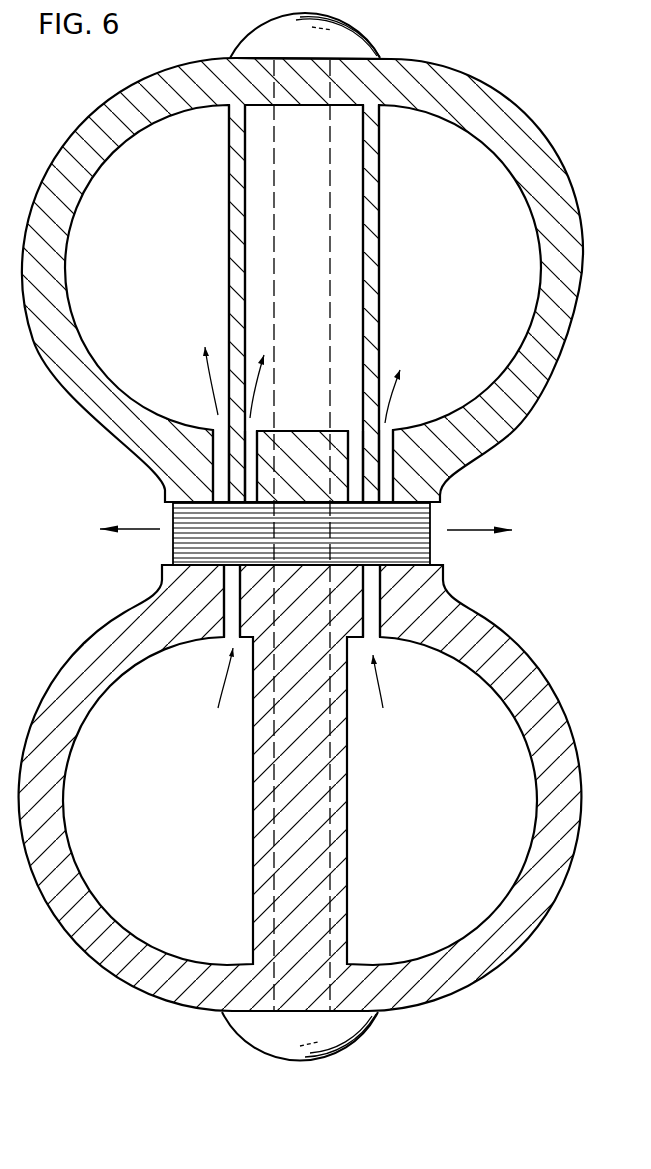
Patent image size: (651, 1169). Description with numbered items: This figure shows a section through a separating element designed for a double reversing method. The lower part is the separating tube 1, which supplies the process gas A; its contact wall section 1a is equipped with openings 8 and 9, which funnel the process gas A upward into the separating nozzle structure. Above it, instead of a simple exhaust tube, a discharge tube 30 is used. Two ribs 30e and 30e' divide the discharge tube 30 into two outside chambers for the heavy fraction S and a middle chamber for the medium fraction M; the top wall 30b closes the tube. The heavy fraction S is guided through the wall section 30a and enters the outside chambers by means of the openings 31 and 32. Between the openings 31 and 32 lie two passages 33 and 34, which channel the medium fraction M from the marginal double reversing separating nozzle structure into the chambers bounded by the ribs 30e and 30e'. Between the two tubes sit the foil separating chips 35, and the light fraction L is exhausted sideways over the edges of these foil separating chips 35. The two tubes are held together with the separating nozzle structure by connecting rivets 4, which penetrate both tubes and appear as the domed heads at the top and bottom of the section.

The discharge tube 30 is at (487, 82).
The top wall of upper housing part 30b is at (218, 76).
The rib 30e is at (210, 303).
The rib 30e' is at (404, 303).
The wall section 30a is at (440, 503).
The opening 31 is at (213, 444).
The opening 32 is at (394, 447).
The passage 33 is at (260, 450).
The passage 34 is at (345, 450).
The foil separating chip 35 is at (172, 544).
The separating tube 1 is at (88, 967).
The contact wall section 1a is at (440, 566).
The opening 8 is at (221, 620).
The opening 9 is at (383, 620).
The connecting rivet 4 is at (362, 49).
The heavy fraction S is at (303, 371).
The medium fraction M is at (260, 375).
The process gas A is at (300, 685).
The light fraction L is at (306, 533).